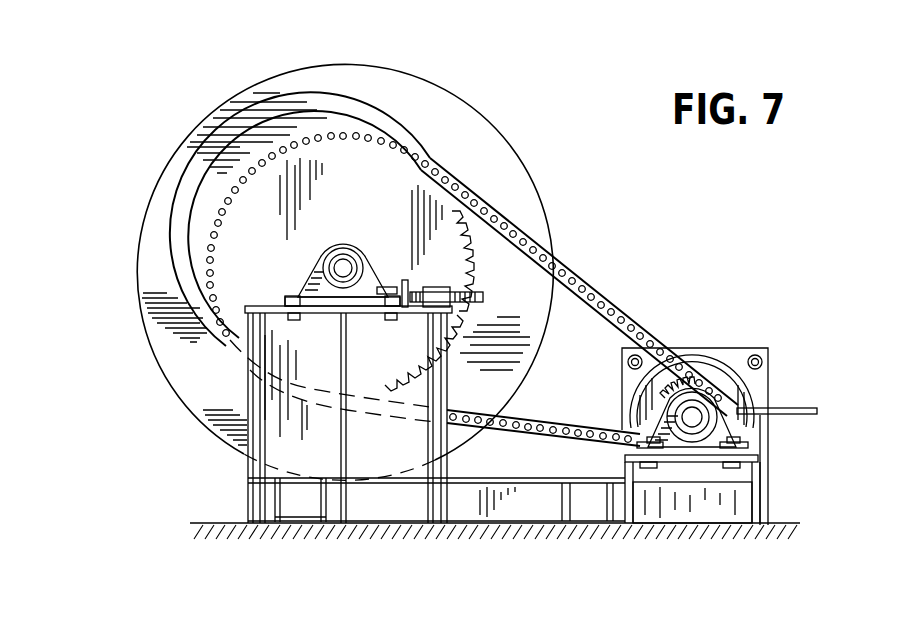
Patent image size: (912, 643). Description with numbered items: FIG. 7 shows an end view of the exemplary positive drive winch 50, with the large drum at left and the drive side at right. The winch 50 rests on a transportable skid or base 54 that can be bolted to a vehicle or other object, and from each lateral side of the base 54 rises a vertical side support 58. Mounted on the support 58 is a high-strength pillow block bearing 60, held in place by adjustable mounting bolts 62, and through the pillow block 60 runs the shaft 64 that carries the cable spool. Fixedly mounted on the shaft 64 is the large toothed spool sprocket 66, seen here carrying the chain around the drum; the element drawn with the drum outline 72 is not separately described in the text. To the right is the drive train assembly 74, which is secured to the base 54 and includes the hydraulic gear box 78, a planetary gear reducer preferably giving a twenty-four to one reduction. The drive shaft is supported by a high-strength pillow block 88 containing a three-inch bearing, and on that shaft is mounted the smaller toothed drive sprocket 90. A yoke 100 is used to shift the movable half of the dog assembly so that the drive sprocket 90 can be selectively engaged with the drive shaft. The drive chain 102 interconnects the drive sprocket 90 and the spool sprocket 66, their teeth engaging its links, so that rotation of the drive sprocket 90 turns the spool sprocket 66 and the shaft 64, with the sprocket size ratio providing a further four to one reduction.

The positive drive winch 50 is at (128, 302).
The transportable skid or base 54 is at (502, 482).
The vertical side supports 58 is at (247, 402).
The pillow block bearing 60 is at (348, 240).
The adjustable mounting bolts 62 is at (436, 278).
The shaft 64 is at (337, 270).
The spool sprocket 66 is at (454, 238).
The drum 72 is at (198, 205).
The drive train assembly 74 is at (745, 332).
The hydraulic gear box 78 is at (768, 372).
The pillow block 88 is at (760, 435).
The drive sprocket 90 is at (670, 380).
The yoke 100 is at (797, 403).
The drive chain 102 is at (572, 272).